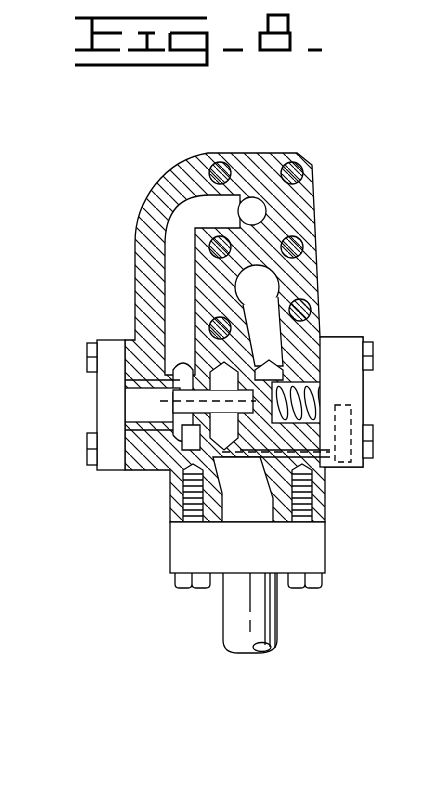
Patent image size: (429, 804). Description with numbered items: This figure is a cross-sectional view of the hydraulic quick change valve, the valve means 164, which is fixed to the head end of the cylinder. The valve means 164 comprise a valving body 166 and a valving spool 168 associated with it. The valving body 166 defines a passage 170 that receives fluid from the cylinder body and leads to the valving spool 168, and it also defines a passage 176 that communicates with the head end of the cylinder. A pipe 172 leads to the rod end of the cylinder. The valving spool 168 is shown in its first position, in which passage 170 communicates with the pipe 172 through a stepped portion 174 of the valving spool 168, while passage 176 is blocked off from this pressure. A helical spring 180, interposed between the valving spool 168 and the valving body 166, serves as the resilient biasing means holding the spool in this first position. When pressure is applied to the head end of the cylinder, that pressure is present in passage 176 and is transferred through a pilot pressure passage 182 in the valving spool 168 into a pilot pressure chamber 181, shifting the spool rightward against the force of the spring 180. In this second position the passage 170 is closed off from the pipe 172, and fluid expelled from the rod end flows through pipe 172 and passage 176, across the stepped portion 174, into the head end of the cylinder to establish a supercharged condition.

The valve means 164 is at (318, 198).
The valving body 166 is at (313, 227).
The valving spool 168 is at (140, 340).
The passage 170 is at (178, 212).
The pipe 172 is at (230, 606).
The stepped portion 174 is at (197, 452).
The passage 176 is at (273, 340).
The helical spring 180 is at (332, 405).
The pilot pressure chamber 181 is at (170, 417).
The pilot pressure passage 182 is at (268, 372).